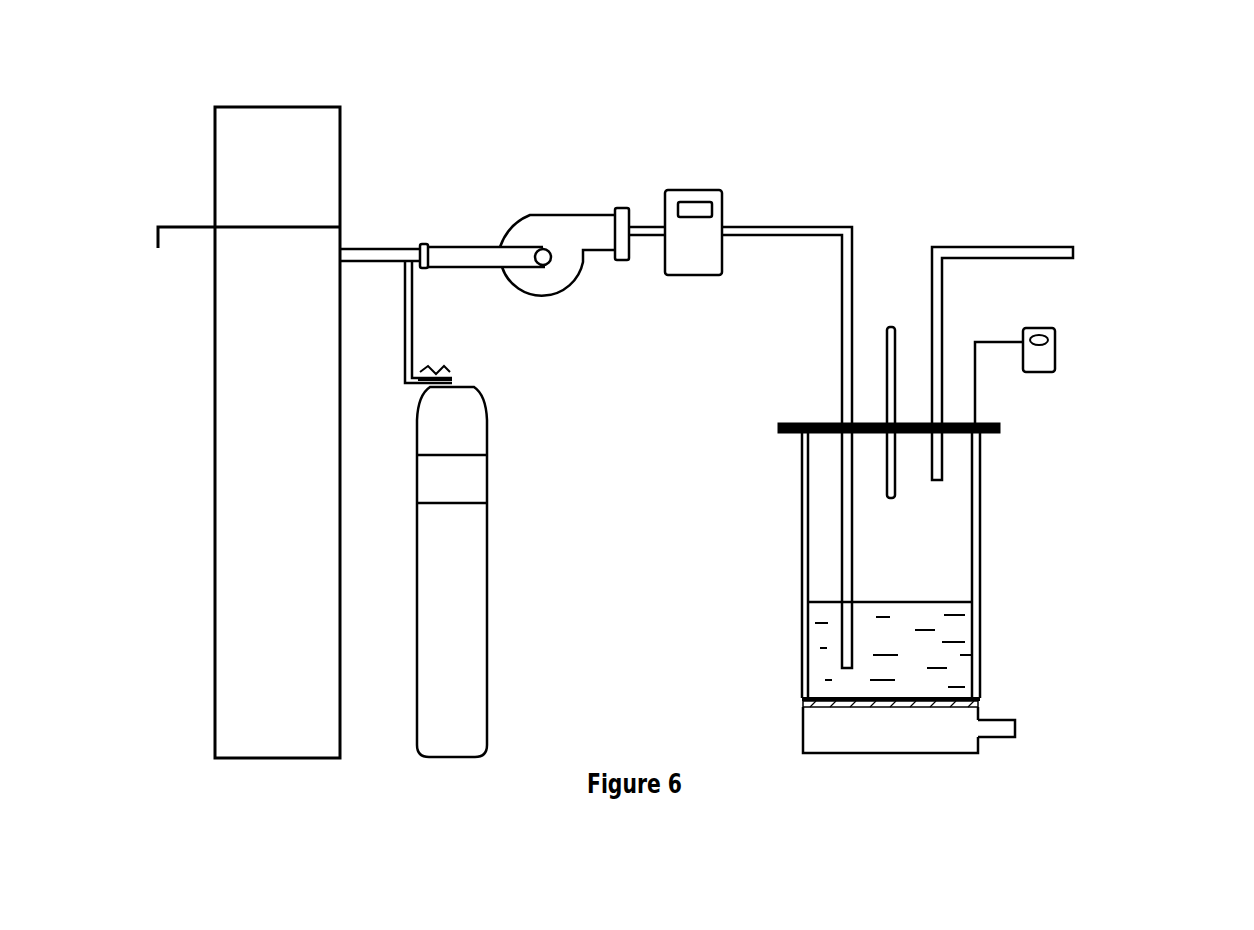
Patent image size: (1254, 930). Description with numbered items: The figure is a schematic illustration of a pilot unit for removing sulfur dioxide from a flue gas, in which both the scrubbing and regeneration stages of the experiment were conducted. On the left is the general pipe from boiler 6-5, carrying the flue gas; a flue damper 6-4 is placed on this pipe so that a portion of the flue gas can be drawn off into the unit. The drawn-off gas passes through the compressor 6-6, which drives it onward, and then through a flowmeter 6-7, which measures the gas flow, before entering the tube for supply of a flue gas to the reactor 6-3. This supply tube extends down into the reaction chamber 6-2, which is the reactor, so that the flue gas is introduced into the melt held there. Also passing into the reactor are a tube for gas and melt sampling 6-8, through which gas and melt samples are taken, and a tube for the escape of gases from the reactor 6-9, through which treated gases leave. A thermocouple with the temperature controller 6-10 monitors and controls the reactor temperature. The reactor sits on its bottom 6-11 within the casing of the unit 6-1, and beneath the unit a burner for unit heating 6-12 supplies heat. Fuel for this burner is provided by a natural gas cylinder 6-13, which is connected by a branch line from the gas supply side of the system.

The casing of the unit 6-1 is at (803, 725).
The reaction chamber 6-2 is at (803, 632).
The tube for supply of a flue gas to the reactor 6-3 is at (840, 535).
The flue damper 6-4 is at (240, 224).
The general pipe from boiler 6-5 is at (318, 178).
The compressor 6-6 is at (562, 225).
The flowmeter 6-7 is at (712, 222).
The tube for gas and melt sampling 6-8 is at (887, 330).
The tube for the escape of gases from the reactor 6-9 is at (988, 250).
The thermocouple with the temperature controller 6-10 is at (1053, 333).
The bottom 6-11 is at (978, 688).
The burner for unit heating 6-12 is at (1013, 718).
The natural gas cylinder 6-13 is at (475, 578).